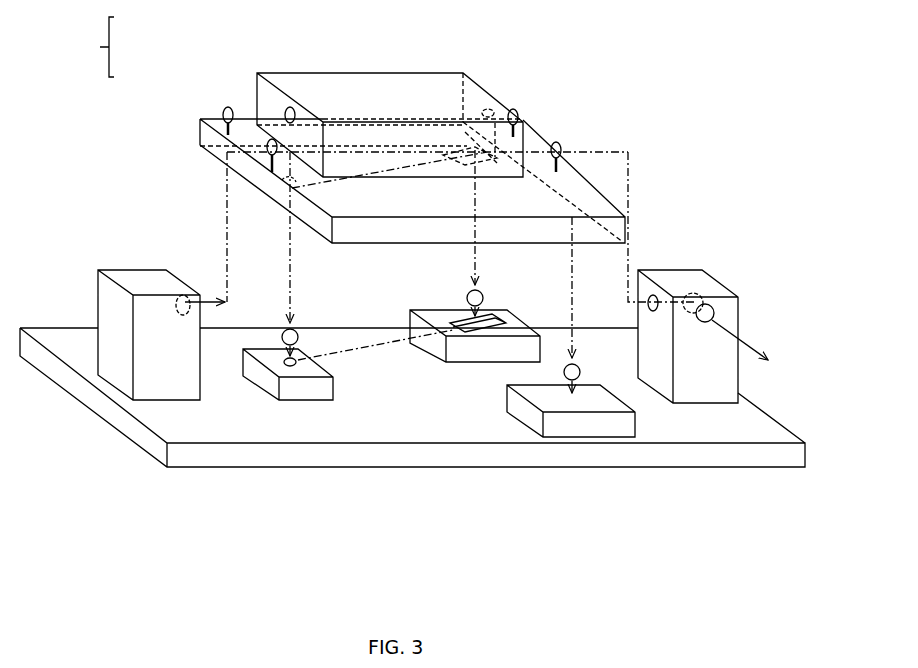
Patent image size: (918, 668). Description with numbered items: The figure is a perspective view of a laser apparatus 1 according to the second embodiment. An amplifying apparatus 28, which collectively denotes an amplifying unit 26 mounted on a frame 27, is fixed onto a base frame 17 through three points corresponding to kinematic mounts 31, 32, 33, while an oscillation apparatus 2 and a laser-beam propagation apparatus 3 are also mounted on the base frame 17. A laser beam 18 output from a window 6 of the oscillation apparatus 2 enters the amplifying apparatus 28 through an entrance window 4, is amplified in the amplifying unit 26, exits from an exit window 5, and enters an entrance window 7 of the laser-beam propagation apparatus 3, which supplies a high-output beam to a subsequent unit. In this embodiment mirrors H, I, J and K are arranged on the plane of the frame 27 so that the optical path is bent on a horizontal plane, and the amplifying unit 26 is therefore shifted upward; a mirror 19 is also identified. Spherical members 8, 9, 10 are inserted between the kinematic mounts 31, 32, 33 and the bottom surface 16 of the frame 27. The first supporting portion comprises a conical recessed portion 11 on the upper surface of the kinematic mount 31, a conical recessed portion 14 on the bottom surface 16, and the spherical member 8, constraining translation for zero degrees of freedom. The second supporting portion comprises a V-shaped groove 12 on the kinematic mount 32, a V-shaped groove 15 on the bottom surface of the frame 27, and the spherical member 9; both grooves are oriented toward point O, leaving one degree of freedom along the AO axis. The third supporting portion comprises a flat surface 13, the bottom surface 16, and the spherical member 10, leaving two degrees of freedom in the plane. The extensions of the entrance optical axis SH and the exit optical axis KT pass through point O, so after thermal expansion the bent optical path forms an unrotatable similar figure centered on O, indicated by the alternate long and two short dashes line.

The laser apparatus 1 is at (131, 134).
The oscillation apparatus 2 is at (138, 270).
The laser-beam propagation apparatus 3 is at (707, 277).
The entrance window 4 is at (272, 139).
The exit window 5 is at (560, 143).
The window of the oscillation apparatus 6 is at (183, 296).
The entrance window of the laser-beam propagation apparatus 7 is at (657, 296).
The spherical member 8 is at (299, 332).
The spherical member 9 is at (466, 294).
The spherical member 10 is at (565, 380).
The conical recessed portion 11 is at (287, 368).
The V-shaped groove 12 is at (466, 334).
The flat surface 13 is at (575, 404).
The conical recessed portion 14 is at (292, 187).
The V-shaped groove 15 is at (485, 110).
The bottom surface 16 is at (574, 222).
The base frame 17 is at (108, 425).
The laser beam 18 is at (200, 296).
The mirror 19 is at (700, 294).
The amplifying unit 26 is at (265, 108).
The frame 27 is at (212, 117).
The amplifying apparatus 28 is at (181, 76).
The kinematic mount 31 is at (308, 392).
The kinematic mount 32 is at (443, 348).
The kinematic mount 33 is at (623, 430).